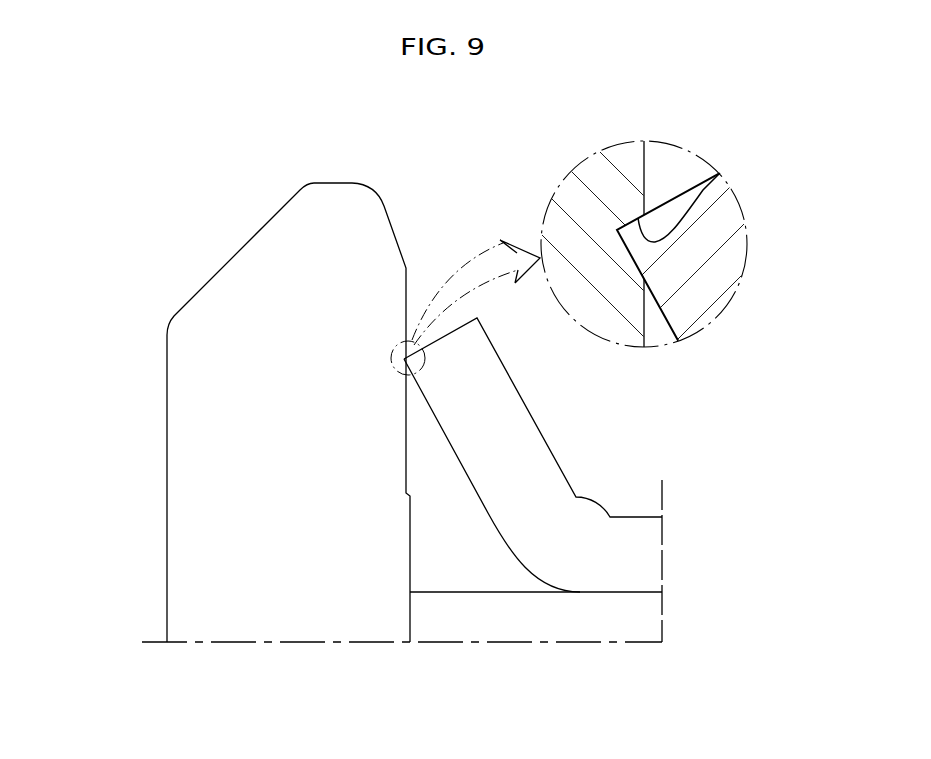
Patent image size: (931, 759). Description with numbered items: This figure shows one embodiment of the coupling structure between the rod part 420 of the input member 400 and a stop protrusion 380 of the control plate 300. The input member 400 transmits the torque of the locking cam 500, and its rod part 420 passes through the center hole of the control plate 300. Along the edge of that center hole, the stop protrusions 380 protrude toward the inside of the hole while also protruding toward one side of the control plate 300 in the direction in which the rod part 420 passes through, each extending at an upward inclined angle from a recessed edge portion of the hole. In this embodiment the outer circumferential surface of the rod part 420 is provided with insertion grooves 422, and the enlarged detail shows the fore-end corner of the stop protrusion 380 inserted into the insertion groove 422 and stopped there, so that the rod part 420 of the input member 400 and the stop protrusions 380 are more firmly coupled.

The control plate 300 is at (642, 558).
The stop protrusions 380 is at (525, 427).
The input member 400 is at (157, 468).
The rod part 420 is at (180, 380).
The insertion grooves 422 is at (728, 187).
The locking cam 500 is at (558, 618).